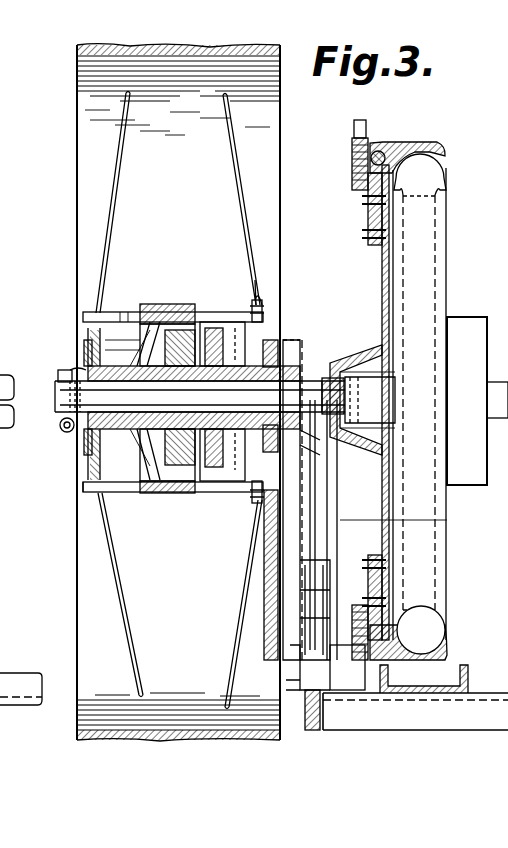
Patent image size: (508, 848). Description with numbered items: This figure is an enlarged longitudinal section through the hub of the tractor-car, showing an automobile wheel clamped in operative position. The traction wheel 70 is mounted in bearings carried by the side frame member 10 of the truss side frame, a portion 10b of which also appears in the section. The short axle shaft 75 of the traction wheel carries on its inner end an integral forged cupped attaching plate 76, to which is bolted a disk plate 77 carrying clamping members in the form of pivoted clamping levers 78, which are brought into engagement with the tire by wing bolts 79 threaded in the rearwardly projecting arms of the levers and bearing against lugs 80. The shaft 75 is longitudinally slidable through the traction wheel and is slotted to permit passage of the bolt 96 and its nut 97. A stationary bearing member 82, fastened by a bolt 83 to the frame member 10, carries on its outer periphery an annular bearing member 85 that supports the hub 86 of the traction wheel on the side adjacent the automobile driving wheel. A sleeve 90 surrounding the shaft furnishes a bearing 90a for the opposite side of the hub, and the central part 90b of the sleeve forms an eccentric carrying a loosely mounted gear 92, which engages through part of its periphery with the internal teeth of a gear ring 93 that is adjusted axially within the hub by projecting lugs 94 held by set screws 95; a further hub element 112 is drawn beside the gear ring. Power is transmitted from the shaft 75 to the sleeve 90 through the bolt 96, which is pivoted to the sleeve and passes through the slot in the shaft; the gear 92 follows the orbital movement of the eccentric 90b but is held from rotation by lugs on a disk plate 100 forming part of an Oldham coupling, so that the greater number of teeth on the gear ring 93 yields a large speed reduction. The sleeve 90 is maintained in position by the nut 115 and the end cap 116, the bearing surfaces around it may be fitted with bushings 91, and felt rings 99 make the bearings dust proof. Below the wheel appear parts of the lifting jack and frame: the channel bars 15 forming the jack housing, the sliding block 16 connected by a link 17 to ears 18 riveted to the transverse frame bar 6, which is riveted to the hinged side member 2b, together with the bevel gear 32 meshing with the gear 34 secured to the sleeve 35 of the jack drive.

The traction wheel 70 is at (82, 130).
The bushings 91 is at (120, 487).
The sleeve 90 is at (58, 410).
The bearing 90a is at (96, 452).
The eccentric 90b is at (96, 470).
The gear 92 is at (140, 330).
The projecting lugs 94 is at (92, 300).
The set screws 95 is at (92, 497).
The gear ring 93 is at (170, 305).
The bearing 112 is at (228, 305).
The disk plate 100 is at (182, 497).
The felt rings 99 is at (60, 376).
The nut 97 is at (62, 368).
The bolt 96 is at (60, 428).
The nut 115 is at (86, 345).
The end cap 116 is at (88, 440).
The side frame member 10 is at (340, 492).
The plate portion 10b is at (268, 617).
The block 16 is at (298, 628).
The attaching plate 76 is at (345, 450).
The stationary bearing member 82 is at (290, 428).
The bolt 83 is at (290, 445).
The axle shaft 75 is at (312, 392).
The disk plate 77 is at (385, 288).
The clamping lever 78 is at (398, 142).
The wing bolt 79 is at (354, 180).
The lug 80 is at (372, 236).
The channel bars 15 is at (365, 518).
The sleeve 35 is at (310, 522).
The transverse frame bar 6 is at (486, 718).
The hinged side member 2b is at (444, 671).
The bevel gear 32 is at (312, 732).
The link 17 is at (347, 668).
The ears 18 is at (360, 692).
The gear 34 is at (258, 716).
The annular bearing member 85 is at (283, 300).
The hub 86 is at (256, 280).